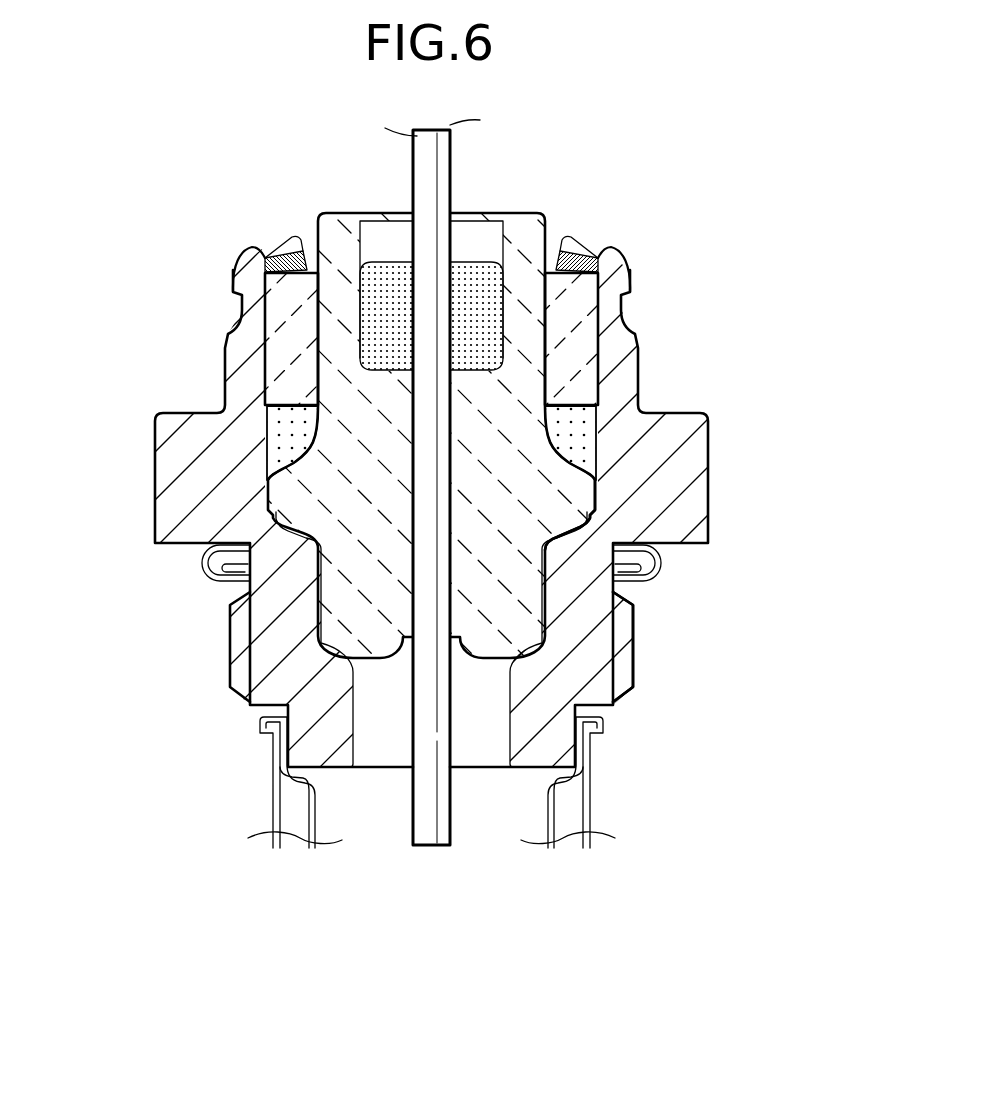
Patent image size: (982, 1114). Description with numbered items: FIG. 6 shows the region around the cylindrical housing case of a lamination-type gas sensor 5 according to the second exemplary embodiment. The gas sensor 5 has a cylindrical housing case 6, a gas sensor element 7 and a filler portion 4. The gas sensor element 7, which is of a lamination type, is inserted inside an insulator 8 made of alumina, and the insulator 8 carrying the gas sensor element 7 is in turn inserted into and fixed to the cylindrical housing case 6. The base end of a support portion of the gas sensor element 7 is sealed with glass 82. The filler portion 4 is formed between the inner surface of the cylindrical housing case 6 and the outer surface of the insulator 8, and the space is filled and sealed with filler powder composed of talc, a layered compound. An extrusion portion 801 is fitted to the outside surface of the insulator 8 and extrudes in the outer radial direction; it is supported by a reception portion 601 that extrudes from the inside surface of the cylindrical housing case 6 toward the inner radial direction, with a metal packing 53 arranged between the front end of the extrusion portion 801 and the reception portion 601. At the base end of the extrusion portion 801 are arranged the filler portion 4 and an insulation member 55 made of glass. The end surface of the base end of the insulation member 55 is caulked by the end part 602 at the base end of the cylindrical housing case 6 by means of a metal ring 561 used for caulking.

The gas sensor 5 is at (650, 867).
The cylindrical housing case 6 is at (222, 512).
The gas sensor element 7 is at (433, 725).
The insulator 8 is at (350, 394).
The glass 82 is at (485, 290).
The insulation member 55 is at (282, 334).
The filler portion 4 is at (293, 433).
The metal ring 561 is at (262, 251).
The end part 602 is at (285, 247).
The extrusion portion 801 is at (565, 490).
The metal packing 53 is at (600, 520).
The reception portion 601 is at (612, 578).